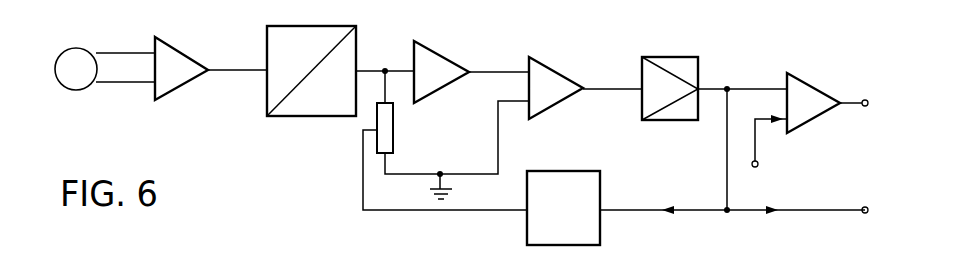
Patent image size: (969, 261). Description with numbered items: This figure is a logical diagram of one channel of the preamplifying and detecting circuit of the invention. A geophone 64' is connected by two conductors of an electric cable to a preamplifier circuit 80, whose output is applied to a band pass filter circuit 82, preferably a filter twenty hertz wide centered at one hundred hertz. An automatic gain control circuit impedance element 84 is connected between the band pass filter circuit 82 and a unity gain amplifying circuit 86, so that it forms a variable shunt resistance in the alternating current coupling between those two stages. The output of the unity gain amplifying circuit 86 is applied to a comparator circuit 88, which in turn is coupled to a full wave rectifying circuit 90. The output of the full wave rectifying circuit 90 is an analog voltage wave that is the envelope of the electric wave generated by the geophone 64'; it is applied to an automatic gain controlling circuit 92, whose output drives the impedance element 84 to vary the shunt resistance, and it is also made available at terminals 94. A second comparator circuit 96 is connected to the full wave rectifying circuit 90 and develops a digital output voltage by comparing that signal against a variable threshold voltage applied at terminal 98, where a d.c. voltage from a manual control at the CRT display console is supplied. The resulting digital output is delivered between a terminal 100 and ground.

The geophone 64' is at (105, 52).
The preamplifier circuit 80 is at (190, 50).
The band pass filter circuit 82 is at (312, 118).
The automatic gain control circuit impedance element 84 is at (395, 143).
The unity gain amplifying circuit 86 is at (454, 60).
The comparator circuit 88 is at (565, 70).
The full wave rectifying circuit 90 is at (665, 57).
The automatic gain controlling circuit 92 is at (558, 171).
The terminals 94 is at (866, 206).
The comparator circuit 96 is at (820, 88).
The terminal 98 is at (759, 164).
The terminal 100 is at (867, 107).